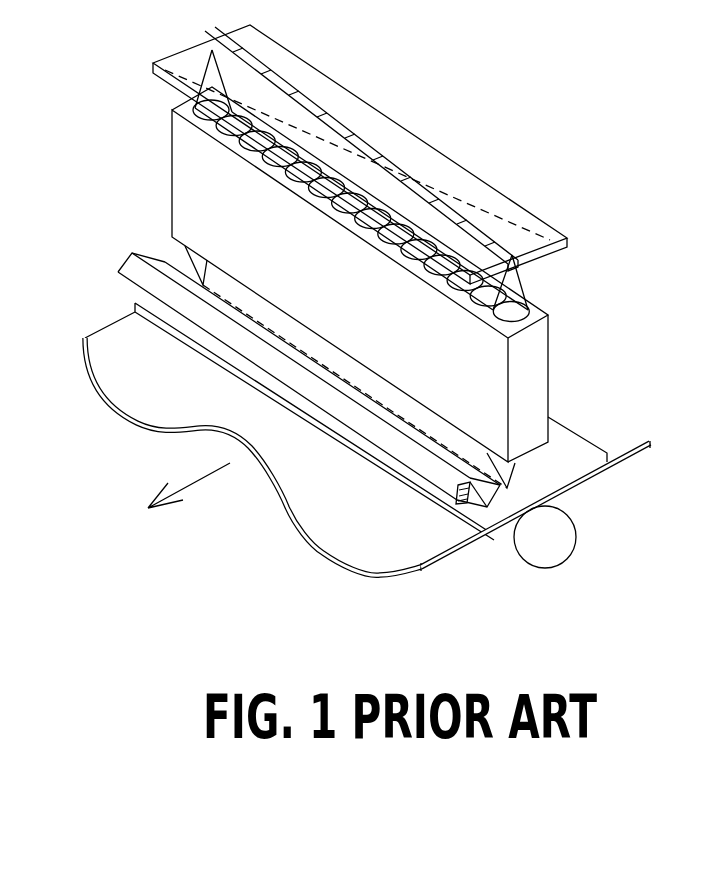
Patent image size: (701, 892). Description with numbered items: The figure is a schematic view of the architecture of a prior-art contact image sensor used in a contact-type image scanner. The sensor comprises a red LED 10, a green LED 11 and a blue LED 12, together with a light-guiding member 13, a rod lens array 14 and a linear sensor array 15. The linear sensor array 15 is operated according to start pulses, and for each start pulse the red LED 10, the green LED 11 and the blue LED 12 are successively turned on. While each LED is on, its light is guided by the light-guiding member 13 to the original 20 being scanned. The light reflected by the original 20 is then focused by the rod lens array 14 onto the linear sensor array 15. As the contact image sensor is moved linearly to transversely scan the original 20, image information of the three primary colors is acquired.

The red LED 10 is at (487, 483).
The green LED 11 is at (484, 502).
The blue LED 12 is at (458, 505).
The light-guiding member 13 is at (137, 275).
The rod lens array 14 is at (533, 368).
The linear sensor array 15 is at (283, 98).
The original 20 is at (333, 510).